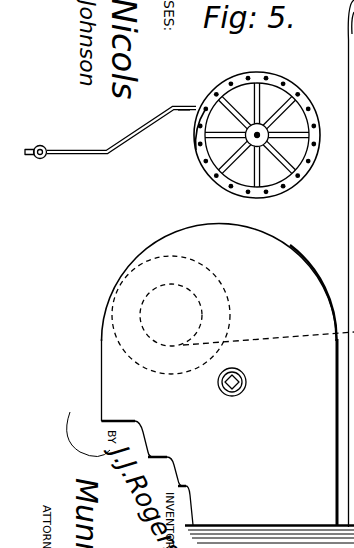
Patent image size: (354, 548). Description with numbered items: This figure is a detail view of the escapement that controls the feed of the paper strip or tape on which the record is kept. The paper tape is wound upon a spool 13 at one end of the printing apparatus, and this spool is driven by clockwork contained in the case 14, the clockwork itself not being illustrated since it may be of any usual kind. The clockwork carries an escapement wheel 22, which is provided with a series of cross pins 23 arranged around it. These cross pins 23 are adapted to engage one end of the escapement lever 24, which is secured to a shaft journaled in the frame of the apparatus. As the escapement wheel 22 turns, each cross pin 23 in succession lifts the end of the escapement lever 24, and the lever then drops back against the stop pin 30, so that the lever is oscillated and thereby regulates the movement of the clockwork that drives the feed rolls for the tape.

The spool 13 is at (222, 307).
The case 14 is at (220, 396).
The escapement wheel 22 is at (210, 176).
The cross pins 23 is at (196, 151).
The escapement lever 24 is at (143, 157).
The stop pin 30 is at (185, 110).